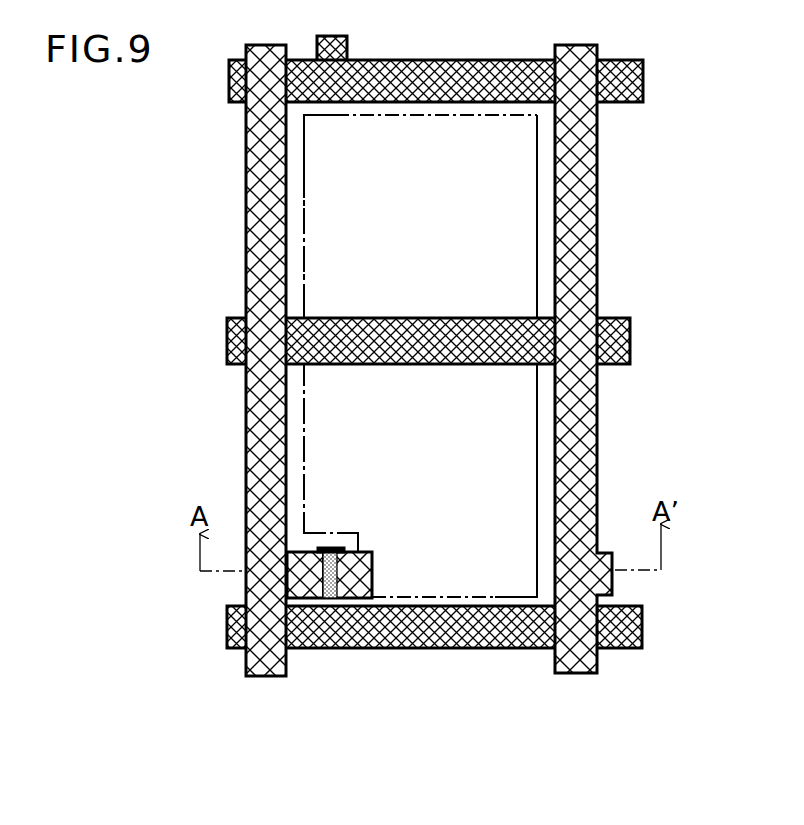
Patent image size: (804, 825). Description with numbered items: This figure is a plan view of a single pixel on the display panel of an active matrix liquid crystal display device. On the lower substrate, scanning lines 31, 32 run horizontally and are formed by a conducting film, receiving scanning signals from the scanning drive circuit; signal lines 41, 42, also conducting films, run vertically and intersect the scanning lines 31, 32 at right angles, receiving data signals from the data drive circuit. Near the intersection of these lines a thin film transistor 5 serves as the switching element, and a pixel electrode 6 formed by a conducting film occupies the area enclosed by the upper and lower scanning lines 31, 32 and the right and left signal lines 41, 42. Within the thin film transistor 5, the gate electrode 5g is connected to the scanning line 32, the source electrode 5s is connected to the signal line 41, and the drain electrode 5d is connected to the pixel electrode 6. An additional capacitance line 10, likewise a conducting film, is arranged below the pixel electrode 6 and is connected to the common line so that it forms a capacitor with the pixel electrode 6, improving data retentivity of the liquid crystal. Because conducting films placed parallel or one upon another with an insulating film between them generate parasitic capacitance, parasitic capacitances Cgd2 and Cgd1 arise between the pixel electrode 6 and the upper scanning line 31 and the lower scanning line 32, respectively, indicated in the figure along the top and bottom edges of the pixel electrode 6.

The signal line 41 is at (268, 13).
The signal line 42 is at (576, 13).
The scanning line 31 is at (645, 78).
The scanning line 32 is at (643, 622).
The additional capacitance line 10 is at (630, 339).
The pixel electrode 6 is at (321, 215).
The thin film transistor 5 is at (384, 649).
The drain electrode 5d is at (362, 550).
The source electrode 5s is at (305, 590).
The gate electrode 5g is at (327, 601).
The parasitic capacitance Cgd1 is at (493, 599).
The parasitic capacitance Cgd2 is at (432, 104).